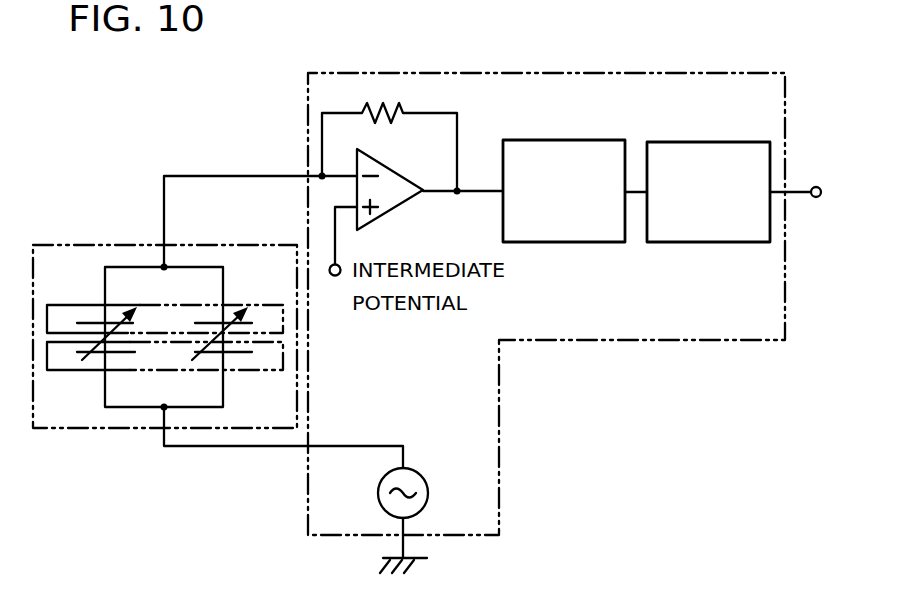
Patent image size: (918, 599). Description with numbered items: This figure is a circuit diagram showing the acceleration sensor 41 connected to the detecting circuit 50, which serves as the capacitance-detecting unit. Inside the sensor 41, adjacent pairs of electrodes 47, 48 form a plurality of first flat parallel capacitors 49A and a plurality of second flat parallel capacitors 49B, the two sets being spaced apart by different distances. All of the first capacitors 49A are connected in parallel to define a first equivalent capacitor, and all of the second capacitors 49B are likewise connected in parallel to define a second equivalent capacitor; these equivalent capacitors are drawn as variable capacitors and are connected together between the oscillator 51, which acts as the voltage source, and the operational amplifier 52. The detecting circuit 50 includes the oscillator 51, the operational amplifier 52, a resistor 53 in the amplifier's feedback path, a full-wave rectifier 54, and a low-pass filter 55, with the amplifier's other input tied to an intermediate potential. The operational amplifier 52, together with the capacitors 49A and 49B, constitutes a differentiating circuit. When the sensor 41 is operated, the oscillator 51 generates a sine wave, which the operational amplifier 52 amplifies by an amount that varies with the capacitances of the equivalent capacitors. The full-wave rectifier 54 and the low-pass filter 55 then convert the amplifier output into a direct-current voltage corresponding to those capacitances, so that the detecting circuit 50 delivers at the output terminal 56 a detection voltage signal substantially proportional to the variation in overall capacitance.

The acceleration sensor 41 is at (165, 291).
The electrode 47 is at (263, 305).
The electrode 48 is at (72, 372).
The first flat parallel capacitors 49A is at (85, 322).
The second flat parallel capacitors 49B is at (298, 388).
The detecting circuit 50 is at (638, 350).
The oscillator 51 is at (417, 477).
The operational amplifier 52 is at (397, 197).
The resistor 53 is at (397, 116).
The full-wave rectifier 54 is at (565, 243).
The low-pass filter 55 is at (712, 243).
The output terminal 56 is at (816, 197).